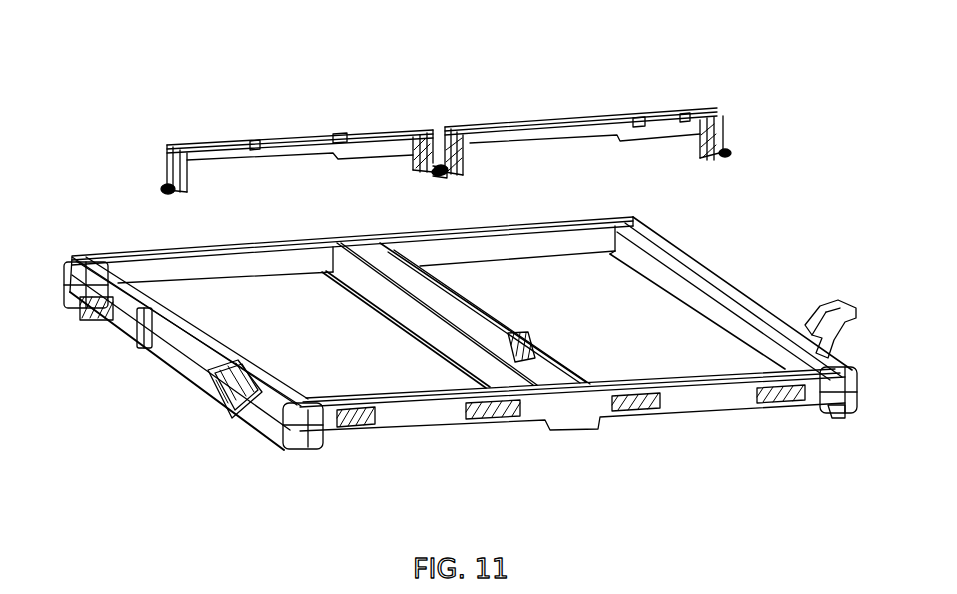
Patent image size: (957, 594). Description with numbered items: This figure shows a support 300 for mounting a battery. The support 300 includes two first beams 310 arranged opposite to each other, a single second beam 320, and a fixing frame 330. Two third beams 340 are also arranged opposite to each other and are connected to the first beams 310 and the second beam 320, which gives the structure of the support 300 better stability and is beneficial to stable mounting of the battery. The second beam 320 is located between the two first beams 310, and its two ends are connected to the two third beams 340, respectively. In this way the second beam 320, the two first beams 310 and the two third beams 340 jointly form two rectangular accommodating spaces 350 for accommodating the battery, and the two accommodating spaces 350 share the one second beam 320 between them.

The support 300 is at (426, 50).
The first beam 310 is at (705, 290).
The second beam 320 is at (400, 322).
The fixing frame 330 is at (189, 158).
The third beam 340 is at (262, 262).
The accommodating space 350 is at (215, 303).